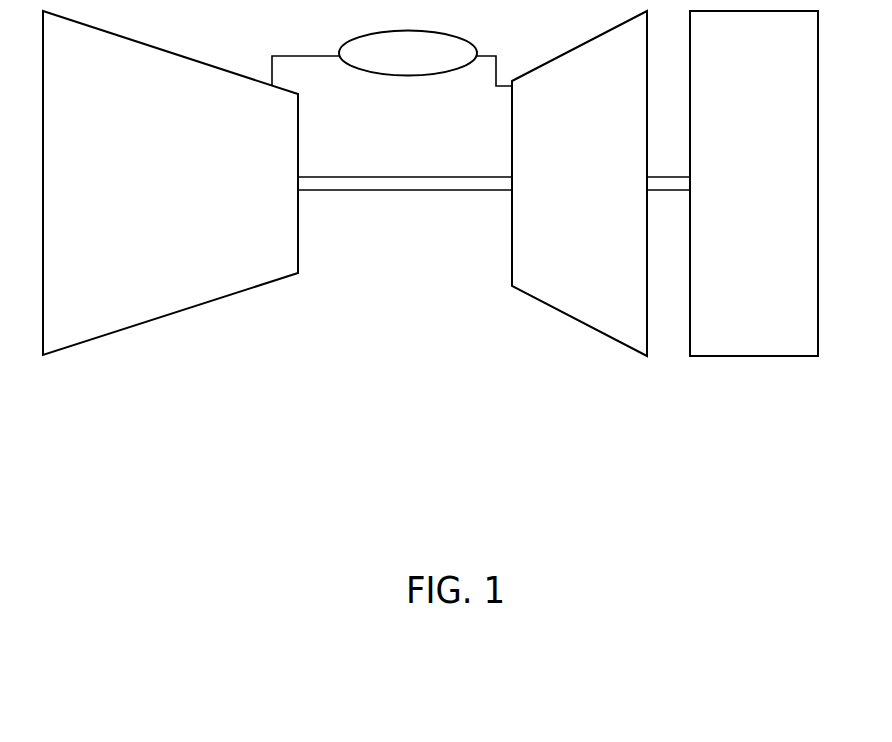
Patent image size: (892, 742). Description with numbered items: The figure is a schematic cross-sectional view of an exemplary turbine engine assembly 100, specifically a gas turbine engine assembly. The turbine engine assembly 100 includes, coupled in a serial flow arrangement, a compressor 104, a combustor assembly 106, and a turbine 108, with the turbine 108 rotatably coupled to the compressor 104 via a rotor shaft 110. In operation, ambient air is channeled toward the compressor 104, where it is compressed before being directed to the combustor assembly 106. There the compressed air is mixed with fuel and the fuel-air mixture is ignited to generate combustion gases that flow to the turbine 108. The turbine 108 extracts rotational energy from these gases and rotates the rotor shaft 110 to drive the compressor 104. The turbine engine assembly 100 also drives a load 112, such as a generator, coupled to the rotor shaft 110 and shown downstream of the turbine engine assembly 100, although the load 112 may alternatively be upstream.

The turbine engine assembly 100 is at (290, 422).
The compressor 104 is at (185, 322).
The combustor assembly 106 is at (401, 82).
The turbine 108 is at (570, 329).
The rotor shaft 110 is at (413, 205).
The load 112 is at (730, 365).